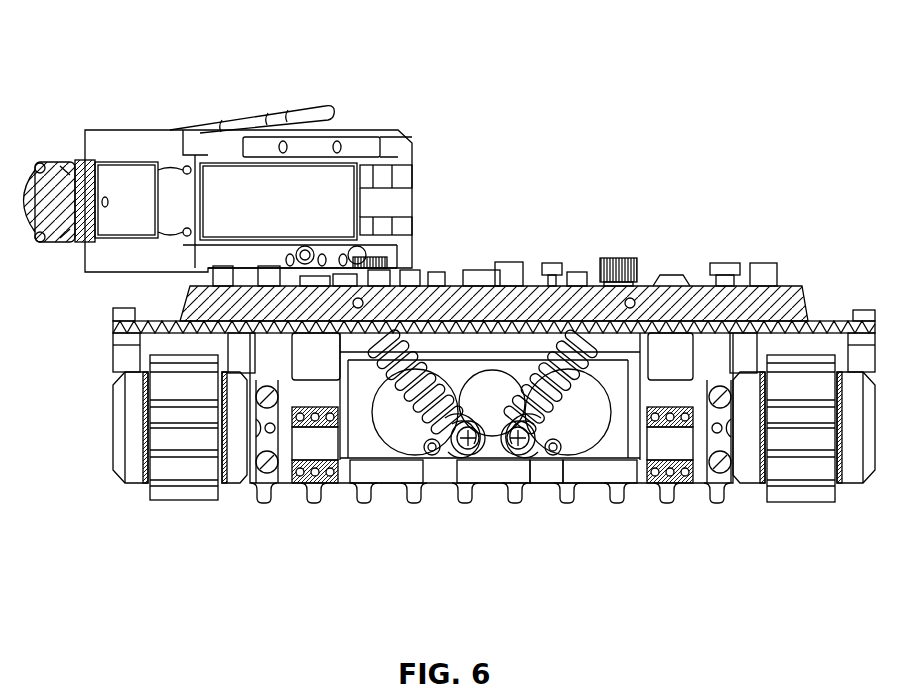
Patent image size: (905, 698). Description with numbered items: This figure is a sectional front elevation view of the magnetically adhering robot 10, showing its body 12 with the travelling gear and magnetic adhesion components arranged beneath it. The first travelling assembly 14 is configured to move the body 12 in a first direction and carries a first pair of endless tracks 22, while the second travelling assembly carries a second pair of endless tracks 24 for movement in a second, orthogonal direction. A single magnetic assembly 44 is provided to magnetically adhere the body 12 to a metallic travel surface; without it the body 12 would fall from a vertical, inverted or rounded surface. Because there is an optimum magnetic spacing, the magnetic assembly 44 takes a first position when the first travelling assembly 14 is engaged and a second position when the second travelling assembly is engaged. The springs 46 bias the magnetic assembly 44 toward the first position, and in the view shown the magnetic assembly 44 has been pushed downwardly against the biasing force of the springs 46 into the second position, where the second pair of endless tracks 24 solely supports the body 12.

The magnetically adhering robot 10 is at (458, 98).
The body 12 is at (797, 286).
The first travelling assembly 14 is at (133, 490).
The first pair of endless tracks 22 is at (180, 501).
The second pair of endless tracks 24 is at (517, 503).
The magnetic assembly 44 is at (398, 470).
The springs 46 is at (571, 347).